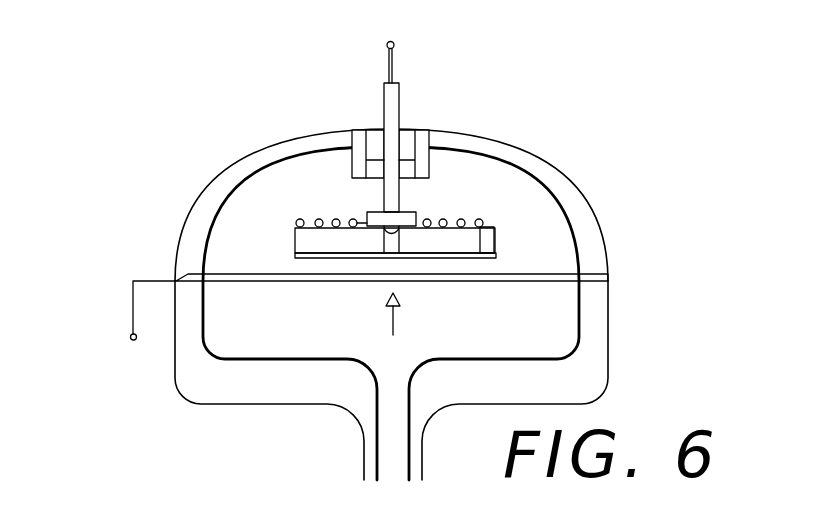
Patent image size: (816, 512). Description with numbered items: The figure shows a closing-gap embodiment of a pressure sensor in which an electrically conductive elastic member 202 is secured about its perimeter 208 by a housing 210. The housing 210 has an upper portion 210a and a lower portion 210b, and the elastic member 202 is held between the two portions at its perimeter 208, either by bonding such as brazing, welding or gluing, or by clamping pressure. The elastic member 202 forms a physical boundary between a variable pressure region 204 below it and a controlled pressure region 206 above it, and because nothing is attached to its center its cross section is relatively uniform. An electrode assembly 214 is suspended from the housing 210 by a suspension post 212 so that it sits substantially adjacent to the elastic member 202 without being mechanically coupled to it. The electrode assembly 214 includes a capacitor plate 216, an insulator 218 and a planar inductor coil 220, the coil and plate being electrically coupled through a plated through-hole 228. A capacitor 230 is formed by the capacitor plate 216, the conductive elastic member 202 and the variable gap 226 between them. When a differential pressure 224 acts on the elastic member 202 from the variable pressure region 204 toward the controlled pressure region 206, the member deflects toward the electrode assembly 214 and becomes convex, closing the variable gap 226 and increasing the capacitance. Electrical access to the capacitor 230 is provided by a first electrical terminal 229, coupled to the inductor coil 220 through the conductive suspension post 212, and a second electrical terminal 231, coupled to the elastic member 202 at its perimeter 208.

The elastic member 202 is at (450, 281).
The variable pressure region 204 is at (545, 321).
The controlled pressure region 206 is at (550, 232).
The perimeter 208 is at (608, 277).
The housing 210 is at (465, 108).
The upper portion 210a is at (267, 155).
The lower portion 210b is at (205, 377).
The suspension post 212 is at (393, 95).
The electrode assembly 214 is at (500, 237).
The capacitor plate 216 is at (297, 252).
The insulator 218 is at (297, 235).
The planar inductor coil 220 is at (300, 218).
The differential pressure 224 is at (390, 320).
The variable gap 226 is at (312, 265).
The plated through-hole 228 is at (480, 237).
The first electrical terminal 229 is at (387, 64).
The capacitor 230 is at (510, 260).
The second electrical terminal 231 is at (130, 339).